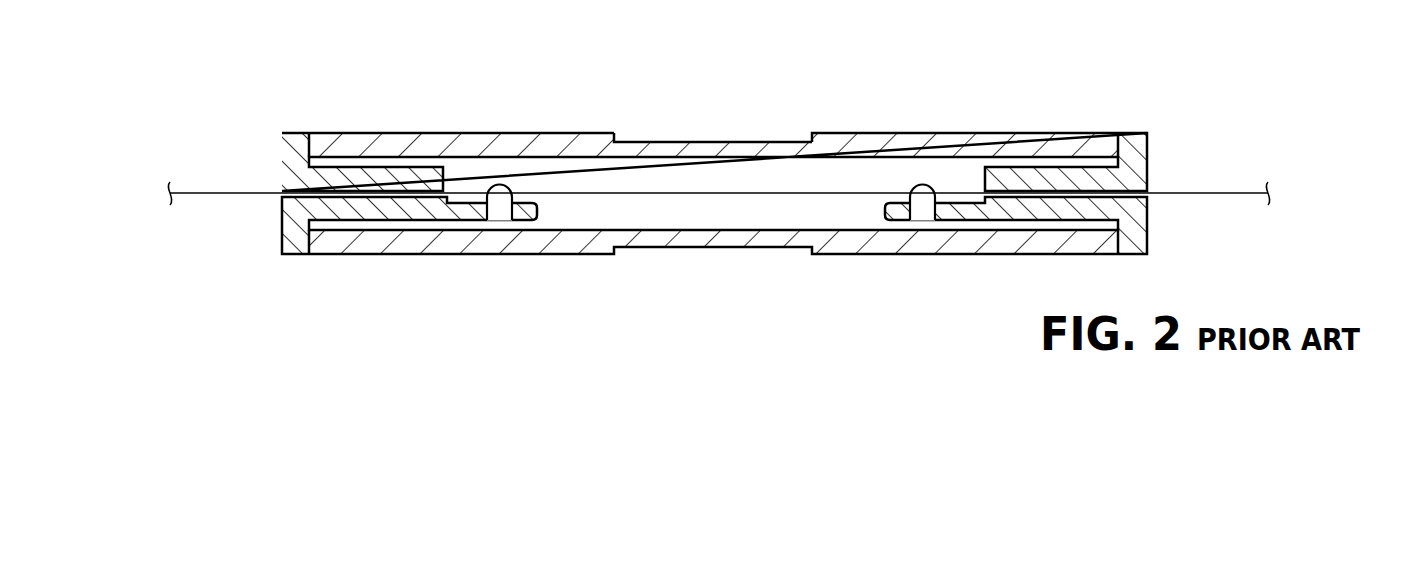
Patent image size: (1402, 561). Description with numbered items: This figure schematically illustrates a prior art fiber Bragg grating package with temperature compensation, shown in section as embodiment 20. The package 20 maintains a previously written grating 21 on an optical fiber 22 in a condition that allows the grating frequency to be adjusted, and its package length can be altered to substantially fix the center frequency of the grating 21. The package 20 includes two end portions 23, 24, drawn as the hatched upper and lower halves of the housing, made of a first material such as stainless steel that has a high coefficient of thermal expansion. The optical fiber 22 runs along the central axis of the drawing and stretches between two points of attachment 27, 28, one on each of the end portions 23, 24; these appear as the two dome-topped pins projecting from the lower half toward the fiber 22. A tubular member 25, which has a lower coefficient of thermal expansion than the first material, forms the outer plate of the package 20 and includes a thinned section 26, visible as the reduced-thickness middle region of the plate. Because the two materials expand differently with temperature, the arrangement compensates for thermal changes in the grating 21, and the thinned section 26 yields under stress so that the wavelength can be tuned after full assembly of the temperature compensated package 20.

The temperature compensated package 20 is at (718, 158).
The grating 21 is at (748, 193).
The fiber 22 is at (1230, 196).
The end portion 23 is at (756, 123).
The end portion 24 is at (672, 245).
The tubular member 25 is at (937, 126).
The thinned section 26 is at (675, 141).
The point of attachment 27 is at (924, 214).
The point of attachment 28 is at (498, 214).